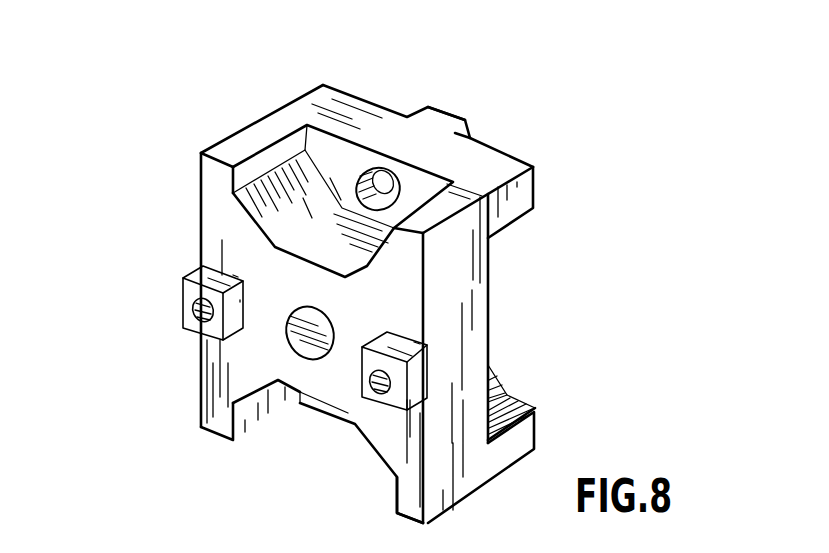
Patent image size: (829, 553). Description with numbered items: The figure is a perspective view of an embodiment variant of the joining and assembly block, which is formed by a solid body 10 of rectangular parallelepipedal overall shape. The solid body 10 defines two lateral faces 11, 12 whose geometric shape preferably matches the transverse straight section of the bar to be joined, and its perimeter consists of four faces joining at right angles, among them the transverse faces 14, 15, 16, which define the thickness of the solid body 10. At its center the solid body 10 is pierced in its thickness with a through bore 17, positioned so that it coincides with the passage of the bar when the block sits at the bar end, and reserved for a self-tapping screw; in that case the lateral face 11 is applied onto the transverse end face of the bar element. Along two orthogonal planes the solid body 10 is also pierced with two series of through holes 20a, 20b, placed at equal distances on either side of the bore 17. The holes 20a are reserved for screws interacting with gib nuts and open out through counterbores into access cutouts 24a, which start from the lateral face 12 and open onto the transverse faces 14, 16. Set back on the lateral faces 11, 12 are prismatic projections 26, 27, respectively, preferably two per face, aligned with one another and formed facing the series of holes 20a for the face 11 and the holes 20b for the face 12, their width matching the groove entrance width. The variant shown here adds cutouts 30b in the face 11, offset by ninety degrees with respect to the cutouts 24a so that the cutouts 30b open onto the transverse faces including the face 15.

The solid body 10 is at (197, 360).
The lateral face 11 is at (510, 148).
The lateral face 12 is at (247, 370).
The transverse face 14 is at (337, 100).
The transverse face 15 is at (200, 186).
The transverse face 16 is at (403, 518).
The through bore 17 is at (313, 337).
The through holes 20a is at (376, 194).
The through holes 20b is at (200, 307).
The access cutouts 24a is at (278, 155).
The projections 26 is at (443, 112).
The projections 27 is at (197, 270).
The cutouts 30b is at (513, 402).